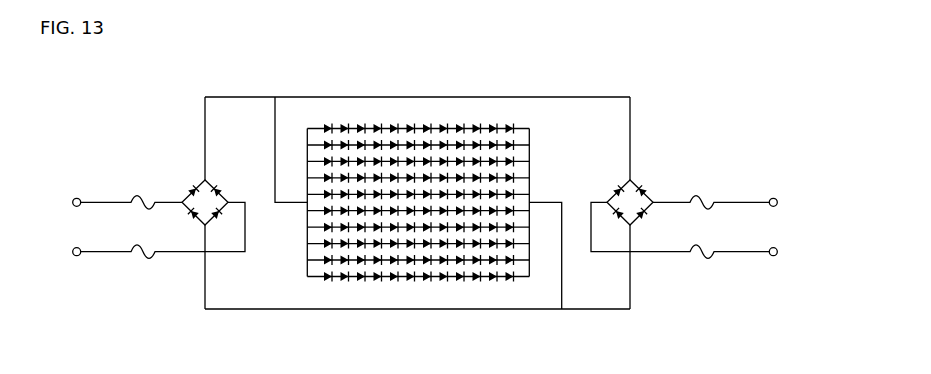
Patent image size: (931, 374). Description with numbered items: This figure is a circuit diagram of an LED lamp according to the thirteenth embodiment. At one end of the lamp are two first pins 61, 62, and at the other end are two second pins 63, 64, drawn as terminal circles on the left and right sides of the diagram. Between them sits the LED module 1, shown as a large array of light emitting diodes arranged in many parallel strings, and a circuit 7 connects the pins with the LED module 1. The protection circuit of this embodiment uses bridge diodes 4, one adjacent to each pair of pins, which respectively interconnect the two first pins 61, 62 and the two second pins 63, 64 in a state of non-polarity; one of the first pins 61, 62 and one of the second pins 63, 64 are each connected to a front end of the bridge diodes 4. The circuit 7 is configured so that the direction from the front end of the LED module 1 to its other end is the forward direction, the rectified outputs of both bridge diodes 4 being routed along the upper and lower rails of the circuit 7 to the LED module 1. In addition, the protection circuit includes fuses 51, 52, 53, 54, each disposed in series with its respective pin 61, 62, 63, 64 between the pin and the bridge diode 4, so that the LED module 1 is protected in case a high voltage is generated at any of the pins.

The LED module 1 is at (412, 110).
The bridge diode 4 is at (187, 185).
The circuit 7 is at (222, 315).
The fuse 51 is at (137, 192).
The fuse 52 is at (135, 260).
The fuse 53 is at (707, 192).
The fuse 54 is at (708, 263).
The first pin 61 is at (73, 195).
The first pin 62 is at (73, 260).
The second pin 63 is at (783, 198).
The second pin 64 is at (783, 257).